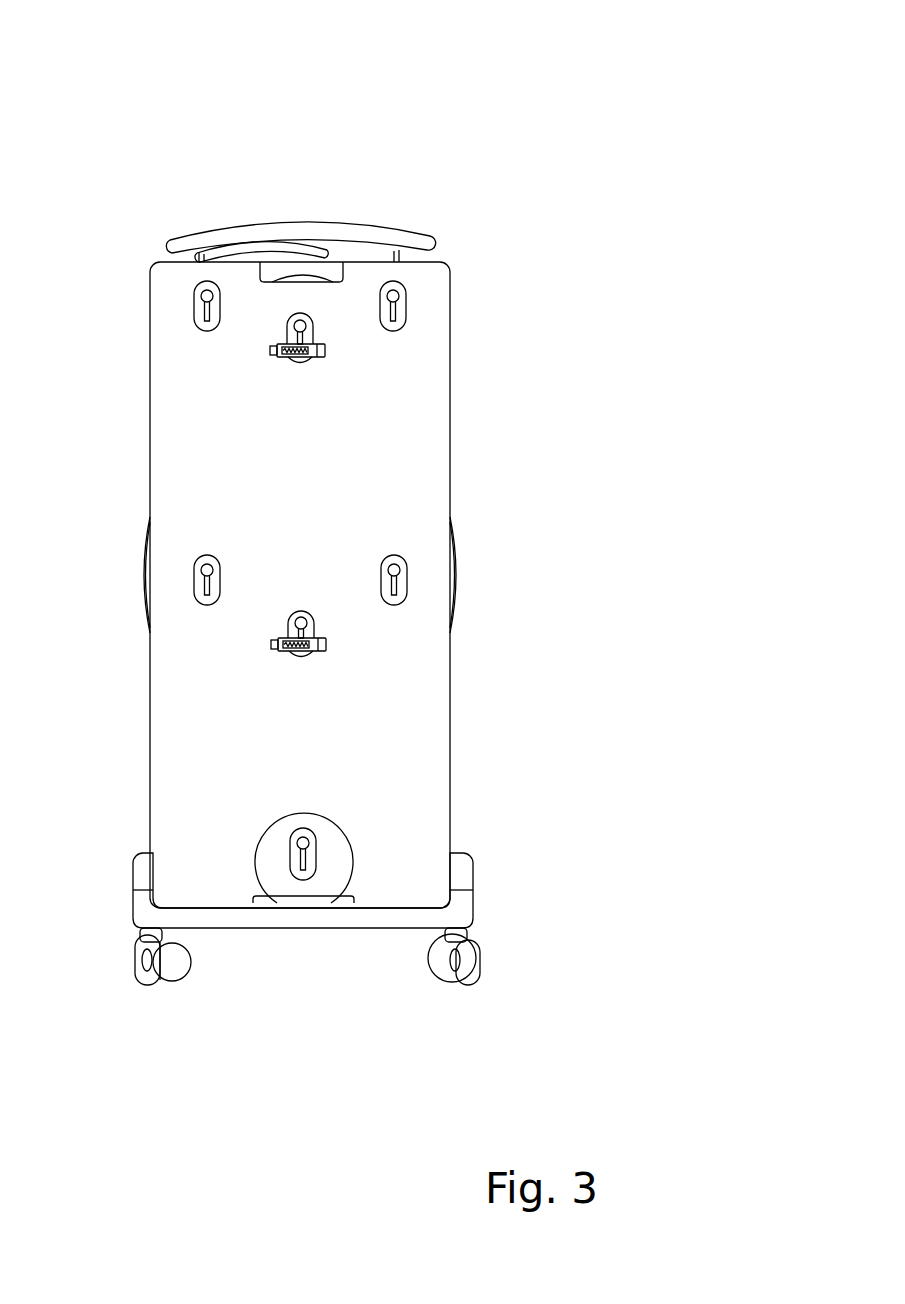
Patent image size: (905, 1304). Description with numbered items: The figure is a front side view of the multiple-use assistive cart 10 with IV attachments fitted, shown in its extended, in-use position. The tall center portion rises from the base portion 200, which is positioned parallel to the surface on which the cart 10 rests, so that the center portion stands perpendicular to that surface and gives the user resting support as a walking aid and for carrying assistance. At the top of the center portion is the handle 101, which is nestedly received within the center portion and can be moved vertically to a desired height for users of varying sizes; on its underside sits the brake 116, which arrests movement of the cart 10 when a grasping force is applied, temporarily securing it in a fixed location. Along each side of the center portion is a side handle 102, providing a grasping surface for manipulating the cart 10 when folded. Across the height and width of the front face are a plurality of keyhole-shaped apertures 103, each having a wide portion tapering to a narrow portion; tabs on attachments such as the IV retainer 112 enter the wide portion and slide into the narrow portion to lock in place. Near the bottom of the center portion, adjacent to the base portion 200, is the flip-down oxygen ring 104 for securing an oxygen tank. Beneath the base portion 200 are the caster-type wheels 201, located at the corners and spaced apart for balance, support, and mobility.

The cart 10 is at (138, 147).
The handle 101 is at (383, 225).
The side handle 102 is at (462, 567).
The apertures 103 is at (202, 305).
The flip-down oxygen ring 104 is at (340, 835).
The IV retainer 112 is at (308, 357).
The brake 116 is at (287, 243).
The base portion 200 is at (268, 913).
The wheels 201 is at (476, 959).